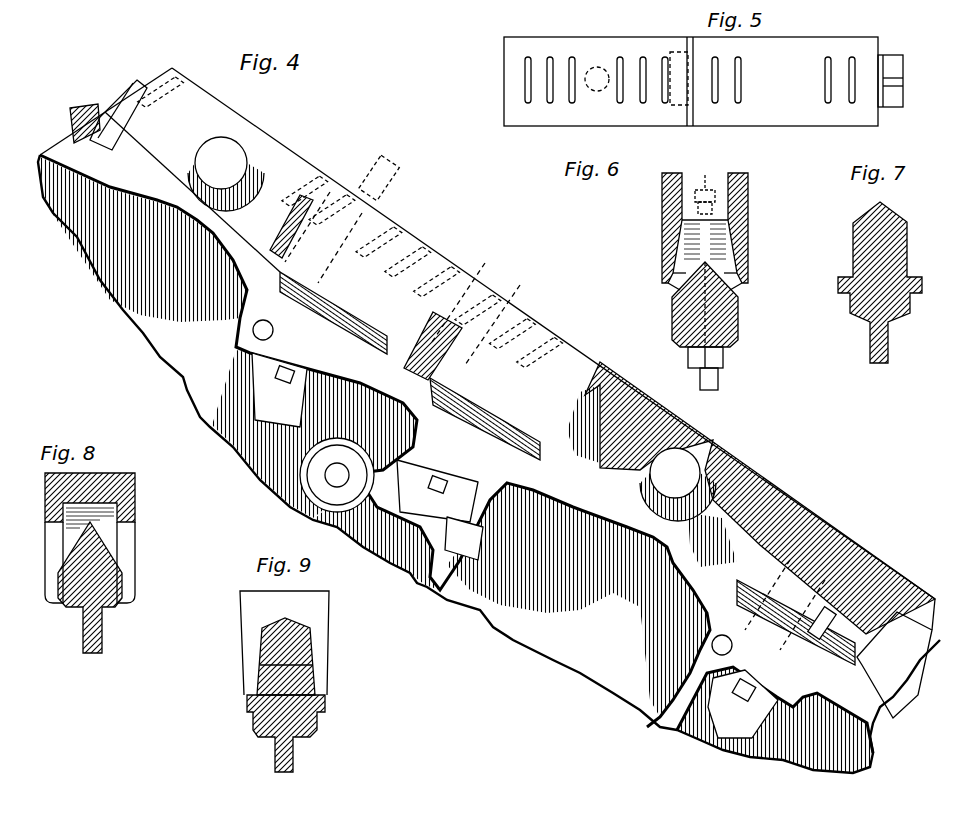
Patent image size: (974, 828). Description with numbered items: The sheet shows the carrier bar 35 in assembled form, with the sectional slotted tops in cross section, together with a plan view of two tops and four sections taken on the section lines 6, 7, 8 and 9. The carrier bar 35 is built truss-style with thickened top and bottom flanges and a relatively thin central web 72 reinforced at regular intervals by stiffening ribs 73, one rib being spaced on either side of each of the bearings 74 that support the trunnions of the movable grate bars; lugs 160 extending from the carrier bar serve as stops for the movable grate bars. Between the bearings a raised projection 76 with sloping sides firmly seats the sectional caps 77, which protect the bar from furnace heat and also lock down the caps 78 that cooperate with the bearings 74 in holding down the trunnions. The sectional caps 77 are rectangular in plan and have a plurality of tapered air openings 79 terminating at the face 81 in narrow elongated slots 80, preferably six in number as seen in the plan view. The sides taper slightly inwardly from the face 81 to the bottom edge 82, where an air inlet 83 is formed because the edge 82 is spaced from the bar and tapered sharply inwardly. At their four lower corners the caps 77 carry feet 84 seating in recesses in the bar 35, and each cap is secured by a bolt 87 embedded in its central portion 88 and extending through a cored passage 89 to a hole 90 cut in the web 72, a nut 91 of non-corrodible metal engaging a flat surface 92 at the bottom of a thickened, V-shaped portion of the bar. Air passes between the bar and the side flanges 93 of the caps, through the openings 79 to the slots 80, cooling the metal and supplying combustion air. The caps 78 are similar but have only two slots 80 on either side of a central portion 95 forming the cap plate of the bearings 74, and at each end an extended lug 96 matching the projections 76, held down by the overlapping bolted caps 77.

In FIG. 4, the section line 6— 6 is at (450, 233).
In FIG. 4, the section line 7— 7 is at (455, 318).
In FIG. 4, the section line 8— 8 is at (285, 108).
In FIG. 4, the section line 9— 9 is at (752, 442).
In FIG. 4, the carrier bar 35 is at (51, 127).
In FIG. 6, the carrier bar 35 is at (672, 330).
In FIG. 7, the carrier bar 35 is at (858, 316).
In FIG. 8, the carrier bar 35 is at (64, 606).
In FIG. 9, the carrier bar 35 is at (255, 735).
In FIG. 4, the central web 72 is at (157, 338).
In FIG. 6, the central web 72 is at (719, 379).
In FIG. 7, the central web 72 is at (871, 350).
In FIG. 8, the central web 72 is at (103, 645).
In FIG. 9, the central web 72 is at (294, 752).
In FIG. 4, the stiffening ribs 73 is at (210, 415).
In FIG. 4, the bearings 74 is at (452, 329).
In FIG. 4, the raised projection 76 is at (452, 280).
In FIG. 7, the raised projection 76 is at (855, 226).
In FIG. 4, the sectional caps 77 is at (375, 212).
In FIG. 5, the sectional caps 77 is at (572, 37).
In FIG. 6, the sectional caps 77 is at (680, 200).
In FIG. 9, the sectional caps 77 is at (326, 612).
In FIG. 4, the caps 78 is at (243, 112).
In FIG. 5, the caps 78 is at (787, 126).
In FIG. 8, the caps 78 is at (46, 476).
In FIG. 4, the air openings 79 is at (812, 518).
In FIG. 4, the slots 80 is at (508, 303).
In FIG. 5, the slots 80 is at (531, 62).
In FIG. 6, the slots 80 is at (684, 173).
In FIG. 6, the face 81 is at (738, 173).
In FIG. 6, the bottom edge 82 is at (668, 271).
In FIG. 6, the air inlet 83 is at (670, 285).
In FIG. 4, the feet 84 is at (290, 268).
In FIG. 4, the bolt 87 is at (830, 618).
In FIG. 6, the bolt 87 is at (705, 182).
In FIG. 4, the central portion 88 is at (392, 190).
In FIG. 4, the cored passage 89 is at (534, 487).
In FIG. 4, the hole 90 is at (245, 388).
In FIG. 4, the nut 91 is at (515, 545).
In FIG. 6, the nut 91 is at (724, 358).
In FIG. 6, the flat surface 92 is at (718, 345).
In FIG. 6, the side flanges 93 is at (665, 250).
In FIG. 4, the central portion 95 is at (684, 432).
In FIG. 4, the extended lug 96 is at (135, 82).
In FIG. 5, the extended lug 96 is at (896, 56).
In FIG. 9, the extended lug 96 is at (268, 645).
In FIG. 4, the lugs 160 is at (482, 548).